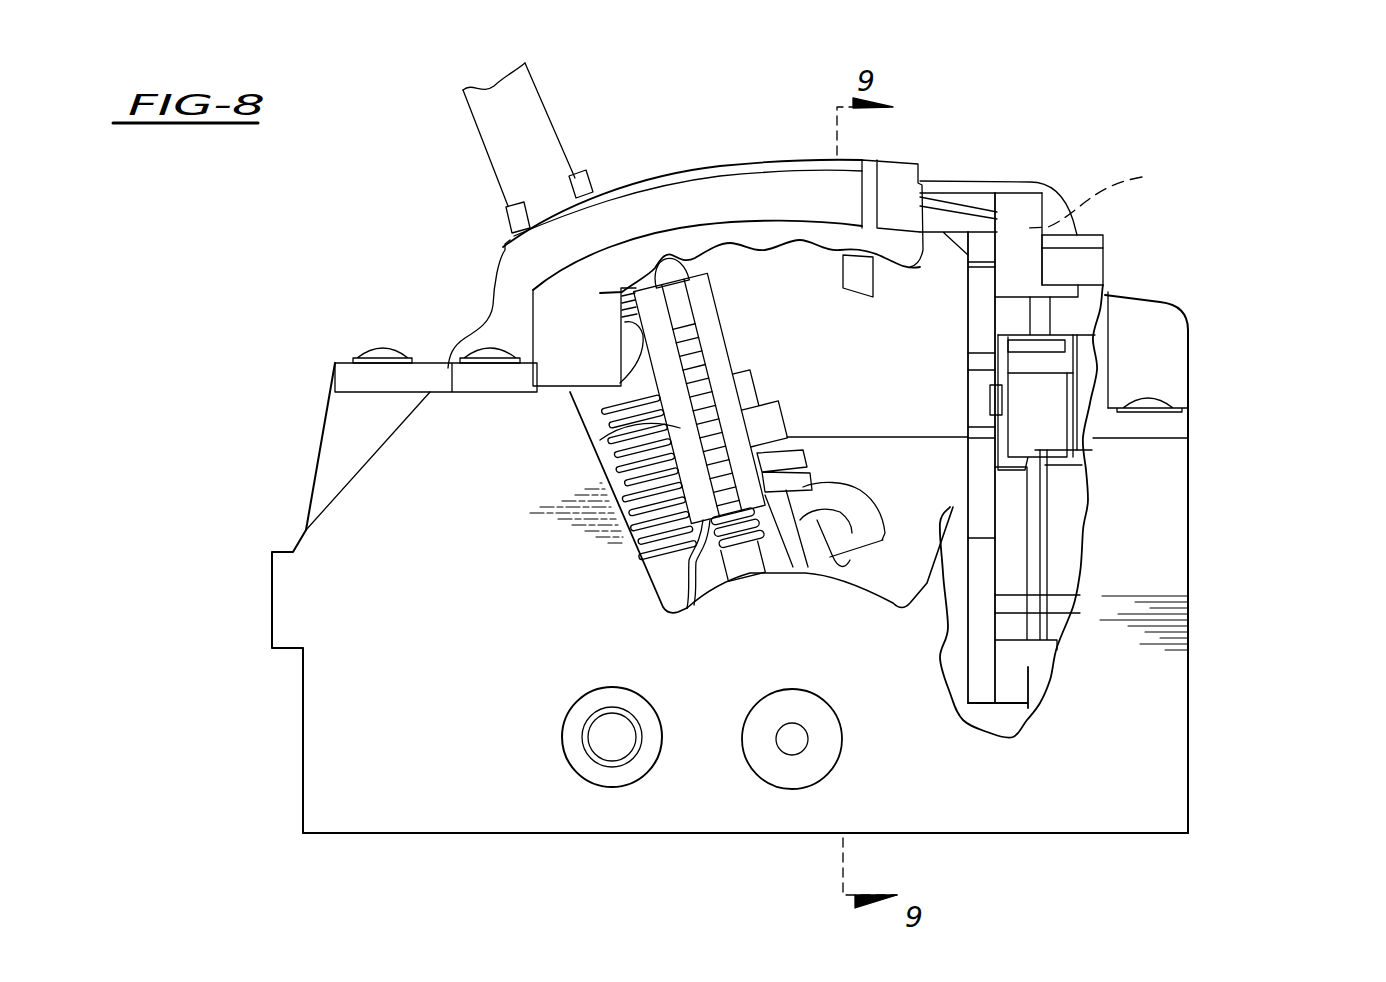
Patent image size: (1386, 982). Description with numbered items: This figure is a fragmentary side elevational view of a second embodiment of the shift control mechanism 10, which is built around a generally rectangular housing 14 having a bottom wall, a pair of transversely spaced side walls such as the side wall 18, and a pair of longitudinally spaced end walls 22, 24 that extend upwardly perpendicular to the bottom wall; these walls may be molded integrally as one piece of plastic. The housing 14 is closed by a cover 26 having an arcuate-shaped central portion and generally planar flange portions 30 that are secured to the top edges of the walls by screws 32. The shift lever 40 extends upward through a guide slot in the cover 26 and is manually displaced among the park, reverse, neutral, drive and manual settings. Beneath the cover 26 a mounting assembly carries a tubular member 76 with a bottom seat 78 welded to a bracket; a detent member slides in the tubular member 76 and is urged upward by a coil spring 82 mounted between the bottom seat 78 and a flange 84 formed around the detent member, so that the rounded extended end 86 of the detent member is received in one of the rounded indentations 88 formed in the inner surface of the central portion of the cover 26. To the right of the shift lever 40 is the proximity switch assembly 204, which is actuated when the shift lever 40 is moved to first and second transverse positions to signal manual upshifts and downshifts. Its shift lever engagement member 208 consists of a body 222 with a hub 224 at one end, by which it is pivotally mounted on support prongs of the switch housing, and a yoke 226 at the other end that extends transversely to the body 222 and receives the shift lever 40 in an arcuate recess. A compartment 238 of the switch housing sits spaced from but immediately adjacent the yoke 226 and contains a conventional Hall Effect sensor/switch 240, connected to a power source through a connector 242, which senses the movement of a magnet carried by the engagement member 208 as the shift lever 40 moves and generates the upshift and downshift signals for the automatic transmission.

The shift control mechanism 10 is at (1246, 176).
The housing 14 is at (1213, 693).
The side wall 18 is at (1175, 785).
The end wall 22 is at (1188, 518).
The end wall 24 is at (302, 702).
The cover 26 is at (645, 175).
The flange portions 30 is at (463, 375).
The screws 32 is at (357, 356).
The shift lever 40 is at (524, 102).
The tubular member 76 is at (603, 440).
The bottom seat 78 is at (747, 575).
The coil spring 82 is at (703, 533).
The flange 84 is at (677, 315).
The extended end 86 is at (657, 278).
The rounded indentations 88 is at (820, 247).
The proximity switch assembly 204 is at (1108, 543).
The shift lever engagement member 208 is at (945, 487).
The body 222 is at (968, 315).
The hub 224 is at (968, 662).
The yoke 226 is at (958, 218).
The compartment 238 is at (1025, 215).
The Hall Effect sensor/switch 240 is at (1112, 196).
The connector 242 is at (1093, 268).